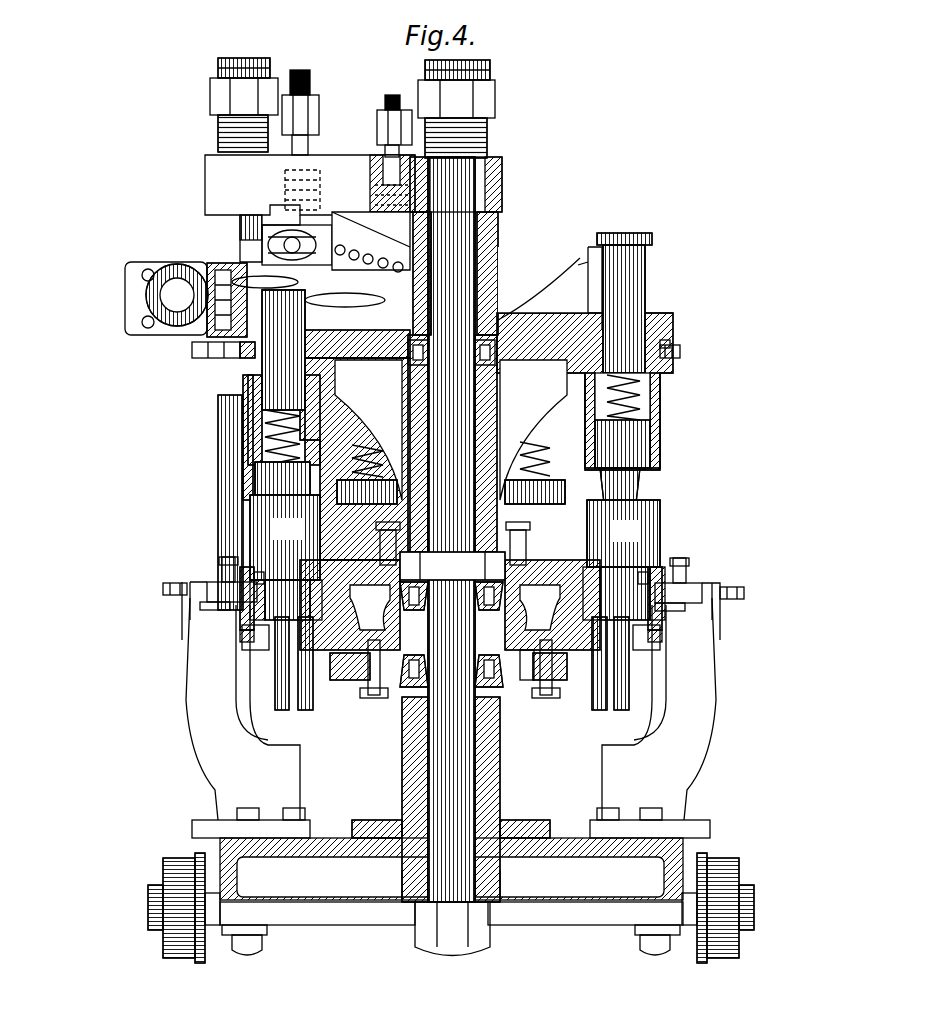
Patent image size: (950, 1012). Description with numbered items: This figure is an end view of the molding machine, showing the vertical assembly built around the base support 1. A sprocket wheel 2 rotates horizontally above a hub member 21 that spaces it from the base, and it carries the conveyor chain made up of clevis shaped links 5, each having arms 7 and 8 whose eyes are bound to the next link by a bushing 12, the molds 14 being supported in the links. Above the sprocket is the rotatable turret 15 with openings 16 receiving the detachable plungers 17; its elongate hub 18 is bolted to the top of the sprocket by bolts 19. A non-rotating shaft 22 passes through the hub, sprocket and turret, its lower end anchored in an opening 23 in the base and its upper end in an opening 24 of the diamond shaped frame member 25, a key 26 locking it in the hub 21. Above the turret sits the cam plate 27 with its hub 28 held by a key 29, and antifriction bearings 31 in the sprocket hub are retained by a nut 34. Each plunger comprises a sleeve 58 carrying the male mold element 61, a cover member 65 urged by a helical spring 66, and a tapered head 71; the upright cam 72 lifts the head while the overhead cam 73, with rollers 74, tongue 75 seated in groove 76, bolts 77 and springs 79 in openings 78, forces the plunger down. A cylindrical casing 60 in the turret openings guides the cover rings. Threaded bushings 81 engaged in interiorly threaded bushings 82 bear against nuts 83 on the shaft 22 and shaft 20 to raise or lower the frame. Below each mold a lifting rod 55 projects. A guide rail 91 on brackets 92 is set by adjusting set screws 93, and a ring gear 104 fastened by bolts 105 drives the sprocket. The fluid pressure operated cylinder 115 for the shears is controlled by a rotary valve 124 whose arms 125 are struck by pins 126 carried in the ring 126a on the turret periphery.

The base support 1 is at (540, 858).
The sprocket wheel 2 is at (541, 610).
The clevis shaped link 5 is at (246, 605).
The arm 7 is at (240, 580).
The arm 8 is at (250, 630).
The bushing 12 is at (255, 637).
The mold 14 is at (457, 557).
The rotatable turret 15 is at (389, 405).
The opening 16 is at (710, 308).
The detachable plunger 17 is at (628, 233).
The elongate hub 18 is at (533, 430).
The bolt 19 is at (378, 538).
The shaft 20 is at (218, 505).
The hub member 21 is at (402, 745).
The shaft 22 is at (462, 643).
The opening 23 is at (425, 870).
The opening 24 is at (500, 165).
The diamond shaped frame member 25 is at (358, 193).
The key 26 is at (482, 782).
The cam plate 27 is at (568, 313).
The hub 28 is at (498, 240).
The key 29 is at (493, 226).
The antifriction bearing 31 is at (400, 592).
The nut 34 is at (462, 575).
The lifting rod 55 is at (345, 712).
The sleeve 58 is at (645, 272).
The cylindrical casing 60 is at (250, 430).
The male mold element 61 is at (640, 462).
The cover member 65 is at (255, 470).
The helical spring 66 is at (268, 425).
The head 71 is at (652, 237).
The upright cam 72 is at (578, 262).
The overhead cam 73 is at (390, 251).
The roller 74 is at (312, 240).
The tongue 75 is at (292, 205).
The groove 76 is at (278, 208).
The bolt 77 is at (395, 118).
The opening 78 is at (312, 175).
The spring 79 is at (372, 198).
The threaded bushing 81 is at (218, 128).
The interiorly threaded bushing 82 is at (490, 172).
The nut 83 is at (262, 70).
The guide rail 91 is at (220, 586).
The bracket 92 is at (186, 698).
The adjusting set screw 93 is at (226, 564).
The ring gear 104 is at (557, 672).
The bolt 105 is at (362, 690).
The fluid pressure operated cylinder 115 is at (146, 303).
The rotary valve 124 is at (212, 272).
The arm 125 is at (192, 348).
The pin 126 is at (236, 358).
The ring 126a is at (668, 345).